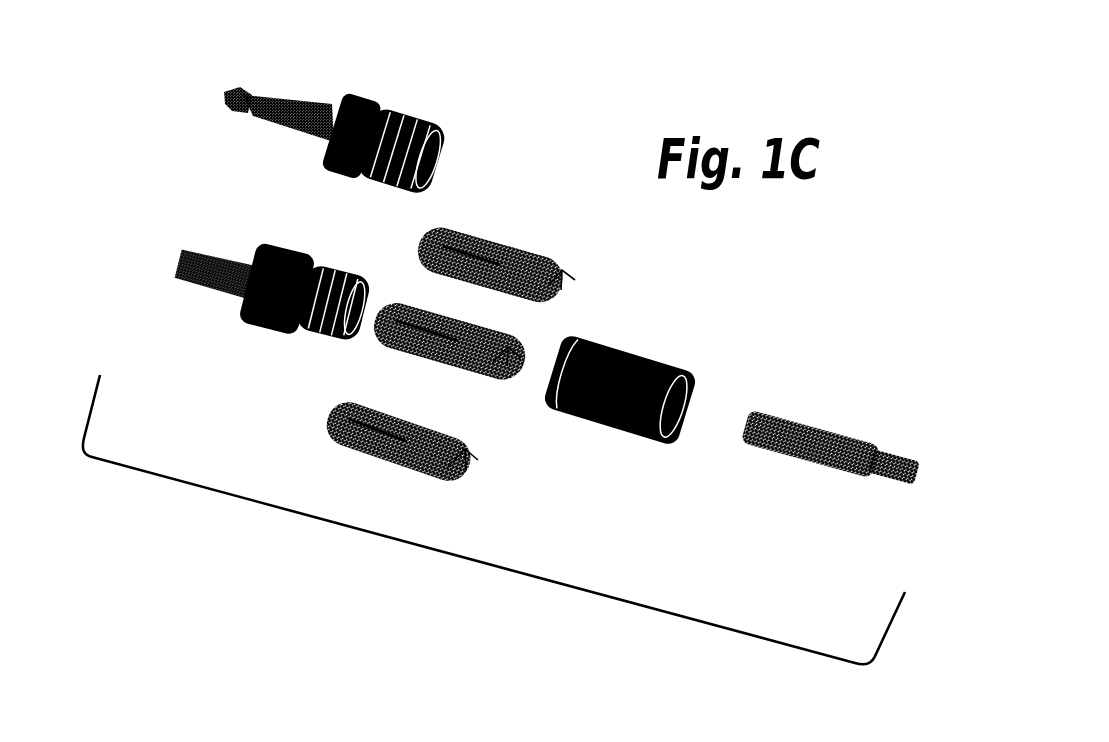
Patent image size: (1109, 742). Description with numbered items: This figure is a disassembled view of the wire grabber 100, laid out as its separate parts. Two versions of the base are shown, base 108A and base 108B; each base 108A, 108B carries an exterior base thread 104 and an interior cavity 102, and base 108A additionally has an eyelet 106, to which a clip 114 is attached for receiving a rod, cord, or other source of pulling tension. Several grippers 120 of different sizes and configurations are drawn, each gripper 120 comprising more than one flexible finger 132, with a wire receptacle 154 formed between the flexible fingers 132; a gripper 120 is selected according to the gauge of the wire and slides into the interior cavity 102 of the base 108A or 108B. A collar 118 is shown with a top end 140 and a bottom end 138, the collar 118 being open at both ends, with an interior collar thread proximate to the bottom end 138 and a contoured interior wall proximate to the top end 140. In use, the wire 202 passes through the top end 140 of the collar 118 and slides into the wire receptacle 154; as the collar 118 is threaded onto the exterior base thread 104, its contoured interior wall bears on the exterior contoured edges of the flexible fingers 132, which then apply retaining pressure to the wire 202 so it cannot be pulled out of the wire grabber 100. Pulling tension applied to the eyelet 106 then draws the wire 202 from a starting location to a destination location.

The wire grabber 100 is at (613, 148).
The interior cavity 102 is at (427, 163).
The exterior base thread 104 is at (417, 130).
The eyelet 106 is at (318, 117).
The base 108A is at (285, 114).
The base 108B is at (260, 310).
The clip 114 is at (255, 110).
The collar 118 is at (653, 366).
The gripper 120 is at (432, 237).
The flexible finger 132 is at (552, 267).
The bottom end 138 is at (567, 342).
The top end 140 is at (690, 400).
The wire receptacle 154 is at (457, 260).
The wire 202 is at (762, 417).